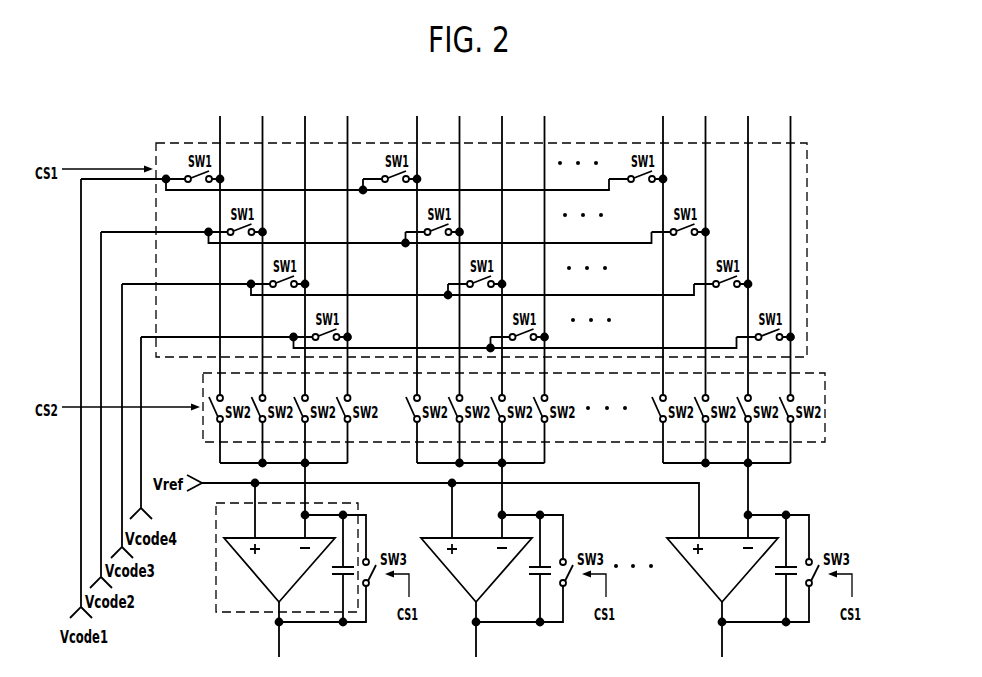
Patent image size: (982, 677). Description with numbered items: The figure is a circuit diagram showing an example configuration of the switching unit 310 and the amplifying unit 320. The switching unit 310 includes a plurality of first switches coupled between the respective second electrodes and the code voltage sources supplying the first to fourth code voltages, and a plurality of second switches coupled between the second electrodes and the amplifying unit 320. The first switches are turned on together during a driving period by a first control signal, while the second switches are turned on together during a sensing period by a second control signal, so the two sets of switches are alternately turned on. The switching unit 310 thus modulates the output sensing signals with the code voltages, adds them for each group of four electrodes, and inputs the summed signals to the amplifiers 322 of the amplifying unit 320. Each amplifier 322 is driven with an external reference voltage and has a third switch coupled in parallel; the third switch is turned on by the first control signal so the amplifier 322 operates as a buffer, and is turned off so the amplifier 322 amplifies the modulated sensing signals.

The switching unit 310 is at (833, 143).
The amplifying unit 320 is at (530, 560).
The amplifier 322 is at (210, 595).